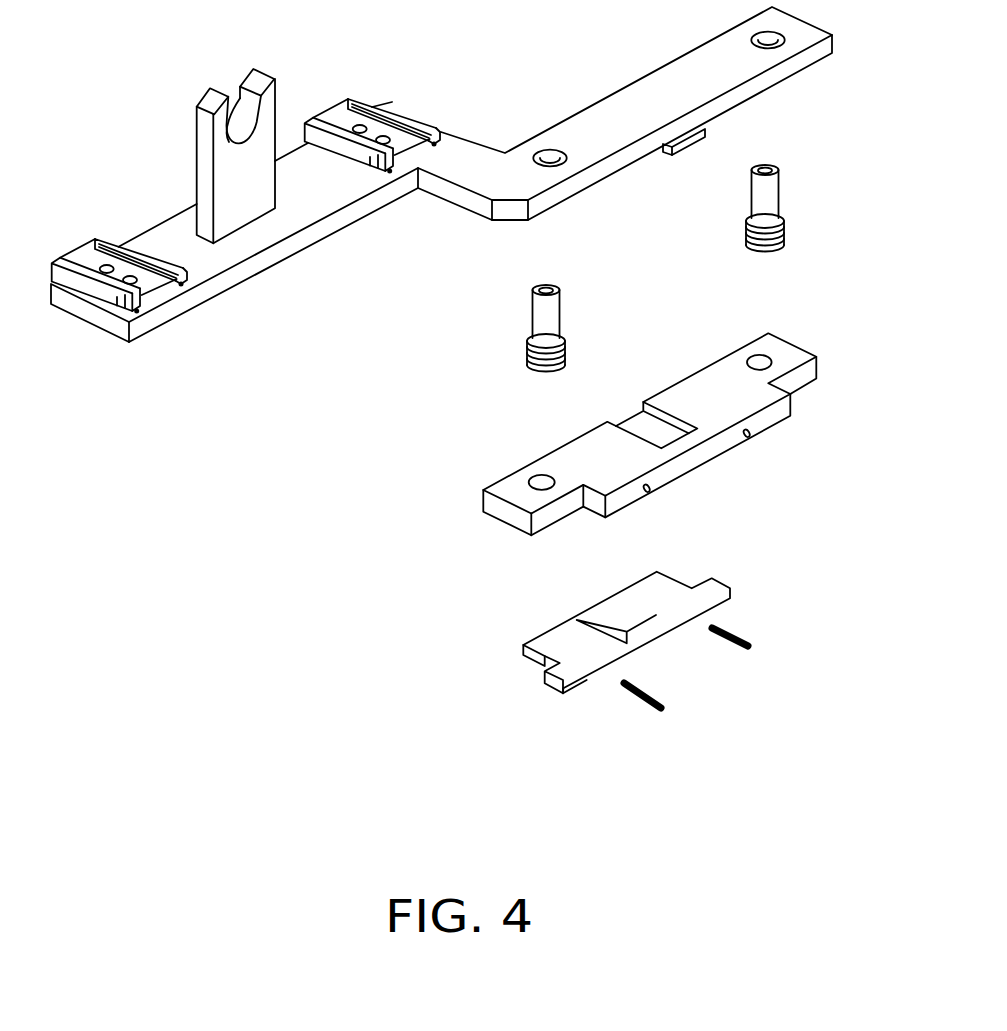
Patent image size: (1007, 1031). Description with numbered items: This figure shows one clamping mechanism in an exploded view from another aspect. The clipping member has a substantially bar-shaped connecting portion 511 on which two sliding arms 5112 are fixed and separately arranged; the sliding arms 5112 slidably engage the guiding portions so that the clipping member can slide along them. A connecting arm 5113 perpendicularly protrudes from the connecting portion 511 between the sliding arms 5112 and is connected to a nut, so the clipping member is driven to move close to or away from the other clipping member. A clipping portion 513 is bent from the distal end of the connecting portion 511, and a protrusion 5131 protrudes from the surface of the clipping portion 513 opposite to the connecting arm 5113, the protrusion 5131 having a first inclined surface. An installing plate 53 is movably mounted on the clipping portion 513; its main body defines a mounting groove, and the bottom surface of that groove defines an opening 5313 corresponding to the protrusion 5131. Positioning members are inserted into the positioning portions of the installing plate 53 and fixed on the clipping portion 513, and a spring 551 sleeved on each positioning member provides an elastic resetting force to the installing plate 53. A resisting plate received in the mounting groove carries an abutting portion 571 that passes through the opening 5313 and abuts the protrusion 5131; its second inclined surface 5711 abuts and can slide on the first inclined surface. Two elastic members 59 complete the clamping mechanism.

The connecting portion 511 is at (223, 286).
The sliding arms 5112 is at (110, 240).
The connecting arm 5113 is at (267, 138).
The clipping portion 513 is at (688, 73).
The protrusion 5131 is at (707, 133).
The spring 551 is at (783, 223).
The installing plate 53 is at (649, 428).
The opening 5313 is at (633, 422).
The abutting portion 571 is at (657, 613).
The second inclined surface 5711 is at (625, 620).
The elastic members 59 is at (640, 703).